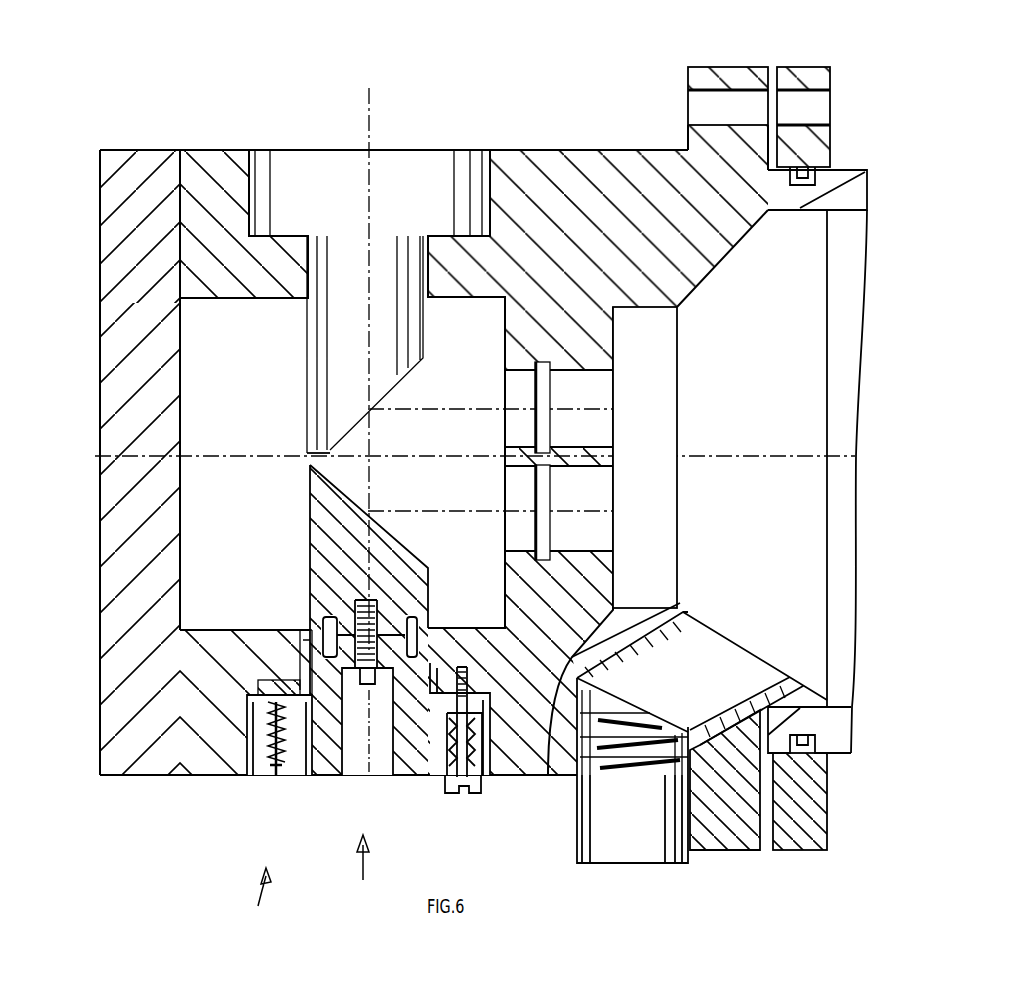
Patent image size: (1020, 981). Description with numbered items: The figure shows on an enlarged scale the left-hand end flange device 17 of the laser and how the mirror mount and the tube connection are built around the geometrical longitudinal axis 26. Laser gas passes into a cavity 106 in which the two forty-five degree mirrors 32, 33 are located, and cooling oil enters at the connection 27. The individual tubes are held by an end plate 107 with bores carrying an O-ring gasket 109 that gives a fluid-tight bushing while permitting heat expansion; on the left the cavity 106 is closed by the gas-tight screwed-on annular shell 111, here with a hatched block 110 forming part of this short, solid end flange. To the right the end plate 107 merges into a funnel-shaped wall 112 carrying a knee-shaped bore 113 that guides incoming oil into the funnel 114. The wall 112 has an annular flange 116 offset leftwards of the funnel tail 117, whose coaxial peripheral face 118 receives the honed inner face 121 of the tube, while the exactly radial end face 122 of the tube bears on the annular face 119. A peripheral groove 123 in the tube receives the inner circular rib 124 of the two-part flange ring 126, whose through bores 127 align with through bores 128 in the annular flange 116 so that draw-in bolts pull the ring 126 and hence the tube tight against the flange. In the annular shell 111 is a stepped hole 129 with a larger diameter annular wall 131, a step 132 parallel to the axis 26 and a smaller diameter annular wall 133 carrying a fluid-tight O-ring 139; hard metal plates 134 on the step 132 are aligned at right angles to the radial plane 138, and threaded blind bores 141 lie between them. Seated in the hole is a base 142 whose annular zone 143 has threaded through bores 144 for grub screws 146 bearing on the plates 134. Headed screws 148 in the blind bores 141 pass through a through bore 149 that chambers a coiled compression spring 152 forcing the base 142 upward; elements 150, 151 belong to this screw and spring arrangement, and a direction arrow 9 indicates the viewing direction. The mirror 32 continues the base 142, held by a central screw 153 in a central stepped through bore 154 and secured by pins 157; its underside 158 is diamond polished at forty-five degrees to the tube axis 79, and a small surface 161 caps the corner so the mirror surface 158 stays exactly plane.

The direction arrow 9 is at (355, 861).
The left-hand end flange device 17 is at (258, 904).
The geometrical longitudinal axis 26 is at (437, 452).
The connection 27 is at (645, 843).
The 45° mirror 32 is at (390, 556).
The 45° mirror 33 is at (395, 392).
The geometrical longitudinal axis of the individual tube 79 is at (628, 510).
The cavity 106 is at (218, 489).
The end plate 107 is at (597, 601).
The O-ring gasket 109 is at (510, 558).
The housing block 110 is at (217, 168).
The annular shell 111 is at (138, 748).
The funnel-shaped rotationally symmetrical wall 112 is at (668, 185).
The knee-shaped bore 113 is at (615, 700).
The funnel 114 is at (750, 353).
The annular flange 116 is at (735, 78).
The funnel tail 117 is at (796, 240).
The peripheral face 118 is at (835, 216).
The annular face 119 is at (775, 127).
The inner face 121 is at (856, 265).
The end face 122 is at (755, 218).
The peripheral groove 123 is at (828, 172).
The inner circular rib 124 is at (800, 735).
The two-part flange ring 126 is at (806, 845).
The through bores 127 is at (818, 102).
The through bores 128 is at (703, 98).
The stepped hole 129 is at (262, 680).
The larger diameter annular wall 131 is at (248, 740).
The step 132 is at (303, 660).
The smaller diameter annular wall 133 is at (437, 650).
The hard metal plate 134 is at (262, 645).
The radial plane 138 is at (372, 127).
The O-ring 139 is at (325, 620).
The blind bores 141 is at (476, 660).
The base 142 is at (320, 745).
The annular zone 143 is at (480, 700).
The screwthreaded through bores 144 is at (270, 745).
The grub screws 146 is at (290, 750).
The headed screws 148 is at (462, 795).
The through bore 149 is at (505, 735).
The plug 150 is at (447, 712).
The guide 151 is at (452, 785).
The coiled compression spring 152 is at (482, 770).
The central screw 153 is at (400, 608).
The central stepped through bore 154 is at (378, 752).
The pins 157 is at (343, 632).
The mirror surface 158 is at (363, 502).
The surface 161 is at (310, 457).